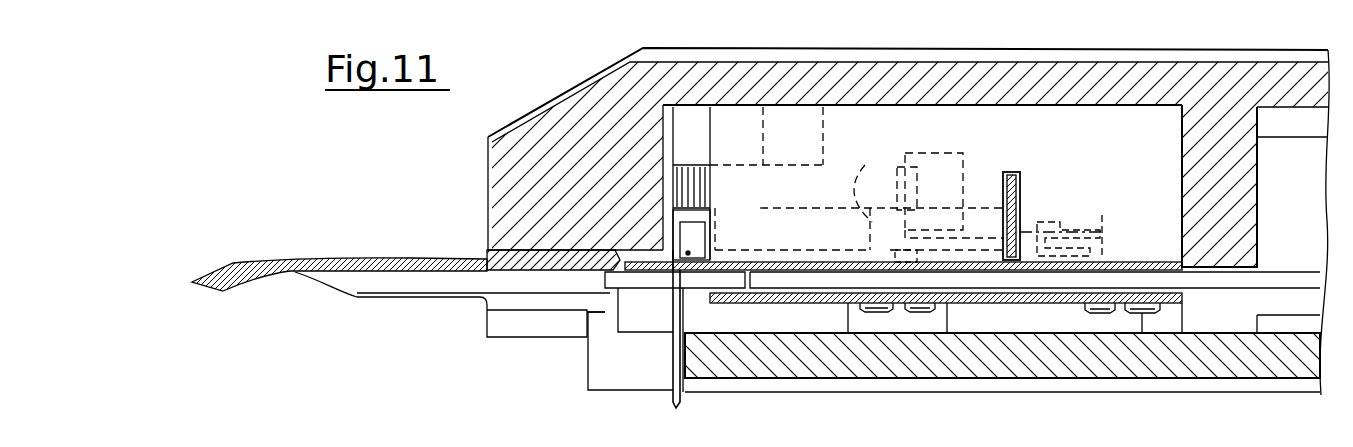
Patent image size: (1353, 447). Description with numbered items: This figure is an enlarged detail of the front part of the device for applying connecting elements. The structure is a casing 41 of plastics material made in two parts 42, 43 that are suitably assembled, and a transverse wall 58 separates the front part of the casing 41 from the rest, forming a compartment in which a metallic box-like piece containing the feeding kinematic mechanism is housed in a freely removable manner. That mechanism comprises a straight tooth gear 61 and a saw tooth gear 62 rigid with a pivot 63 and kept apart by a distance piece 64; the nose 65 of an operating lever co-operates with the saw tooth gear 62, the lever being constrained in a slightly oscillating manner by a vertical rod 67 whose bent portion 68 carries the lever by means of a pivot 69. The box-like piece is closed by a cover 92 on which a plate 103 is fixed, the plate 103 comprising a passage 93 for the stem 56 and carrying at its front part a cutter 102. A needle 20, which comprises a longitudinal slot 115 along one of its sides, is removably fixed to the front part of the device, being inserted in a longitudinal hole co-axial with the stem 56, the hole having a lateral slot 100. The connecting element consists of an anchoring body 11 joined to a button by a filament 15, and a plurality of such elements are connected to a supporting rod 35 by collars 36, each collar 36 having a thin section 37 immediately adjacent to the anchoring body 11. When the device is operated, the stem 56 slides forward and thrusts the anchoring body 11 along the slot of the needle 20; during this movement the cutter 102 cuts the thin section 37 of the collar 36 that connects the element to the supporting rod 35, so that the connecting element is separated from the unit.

The casing 41 is at (1066, 52).
The casing part 42 is at (1046, 376).
The casing part 43 is at (1013, 107).
The transverse wall 58 is at (1247, 218).
The needle 20 is at (223, 263).
The longitudinal slot 115 is at (337, 283).
The lateral slot 100 is at (522, 328).
The cutter 102 is at (640, 270).
The anchoring body 11 is at (657, 280).
The thin section 37 is at (695, 272).
The filament 15 is at (675, 409).
The collar 36 is at (686, 252).
The supporting rod 35 is at (700, 233).
The straight tooth gear 61 is at (700, 252).
The saw tooth gear 62 is at (686, 172).
The pivot 63 is at (763, 140).
The distance piece 64 is at (867, 165).
The nose 65 is at (930, 160).
The vertical rod 67 is at (1018, 192).
The pivot 69 is at (1057, 222).
The bent portion 68 is at (1102, 215).
The cover 92 is at (1120, 262).
The stem 56 is at (1152, 284).
The passage 93 is at (982, 290).
The plate 103 is at (1038, 288).